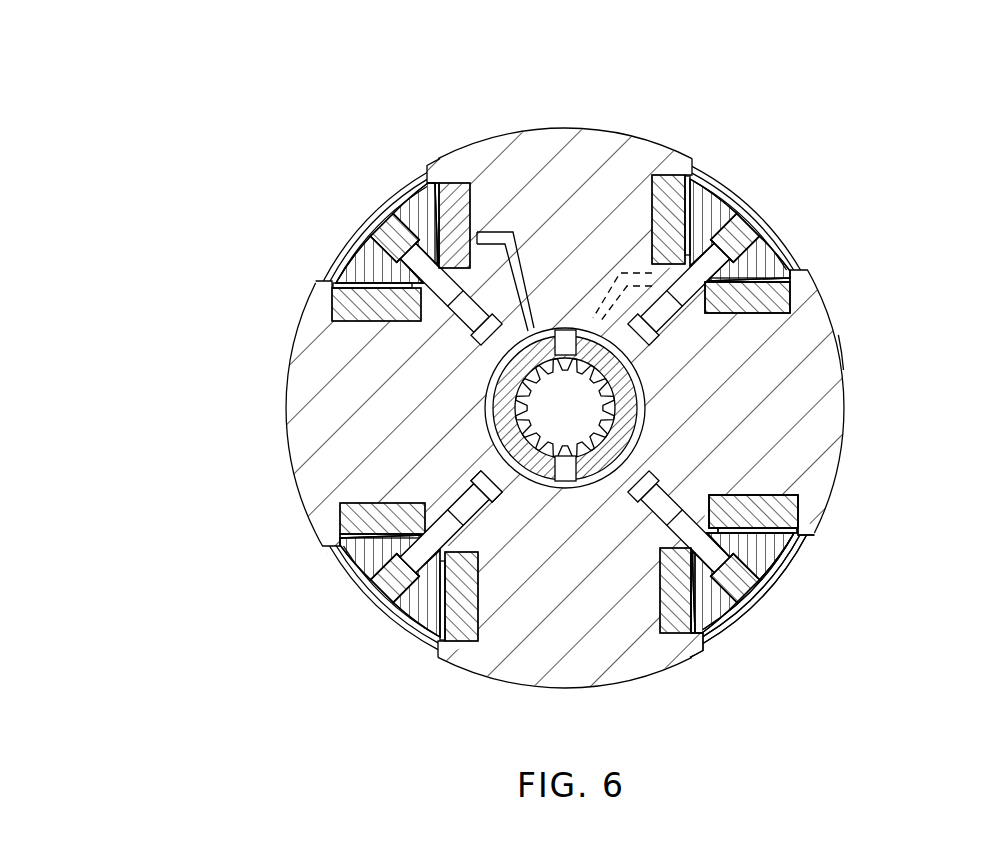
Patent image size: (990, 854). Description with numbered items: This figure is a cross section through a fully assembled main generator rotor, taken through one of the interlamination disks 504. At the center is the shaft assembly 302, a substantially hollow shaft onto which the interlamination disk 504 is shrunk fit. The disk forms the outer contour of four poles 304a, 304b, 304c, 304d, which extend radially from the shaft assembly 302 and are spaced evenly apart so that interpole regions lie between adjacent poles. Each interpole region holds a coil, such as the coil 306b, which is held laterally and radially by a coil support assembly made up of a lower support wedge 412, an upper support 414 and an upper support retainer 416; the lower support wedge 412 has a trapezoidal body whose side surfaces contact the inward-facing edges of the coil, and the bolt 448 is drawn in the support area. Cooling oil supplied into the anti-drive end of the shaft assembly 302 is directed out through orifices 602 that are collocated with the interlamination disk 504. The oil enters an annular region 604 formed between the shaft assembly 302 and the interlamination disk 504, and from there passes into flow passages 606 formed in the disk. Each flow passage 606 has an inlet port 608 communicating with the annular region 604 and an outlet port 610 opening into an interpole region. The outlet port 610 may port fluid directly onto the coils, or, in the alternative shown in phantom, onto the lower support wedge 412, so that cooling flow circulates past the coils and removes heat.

The shaft assembly 302 is at (641, 408).
The pole 304a is at (549, 100).
The pole 304b is at (899, 408).
The pole 304c is at (575, 706).
The pole 304d is at (237, 408).
The coil 306b is at (762, 318).
The lower support wedge 412 is at (702, 506).
The upper support 414 is at (762, 500).
The upper support retainer 416 is at (765, 590).
The bolt 448 is at (465, 523).
The interlamination disk 504 is at (832, 334).
The orifice 602 is at (570, 490).
The annular region 604 is at (648, 385).
The flow passage 606 is at (522, 250).
The inlet port 608 is at (540, 318).
The outlet port 610 is at (480, 238).